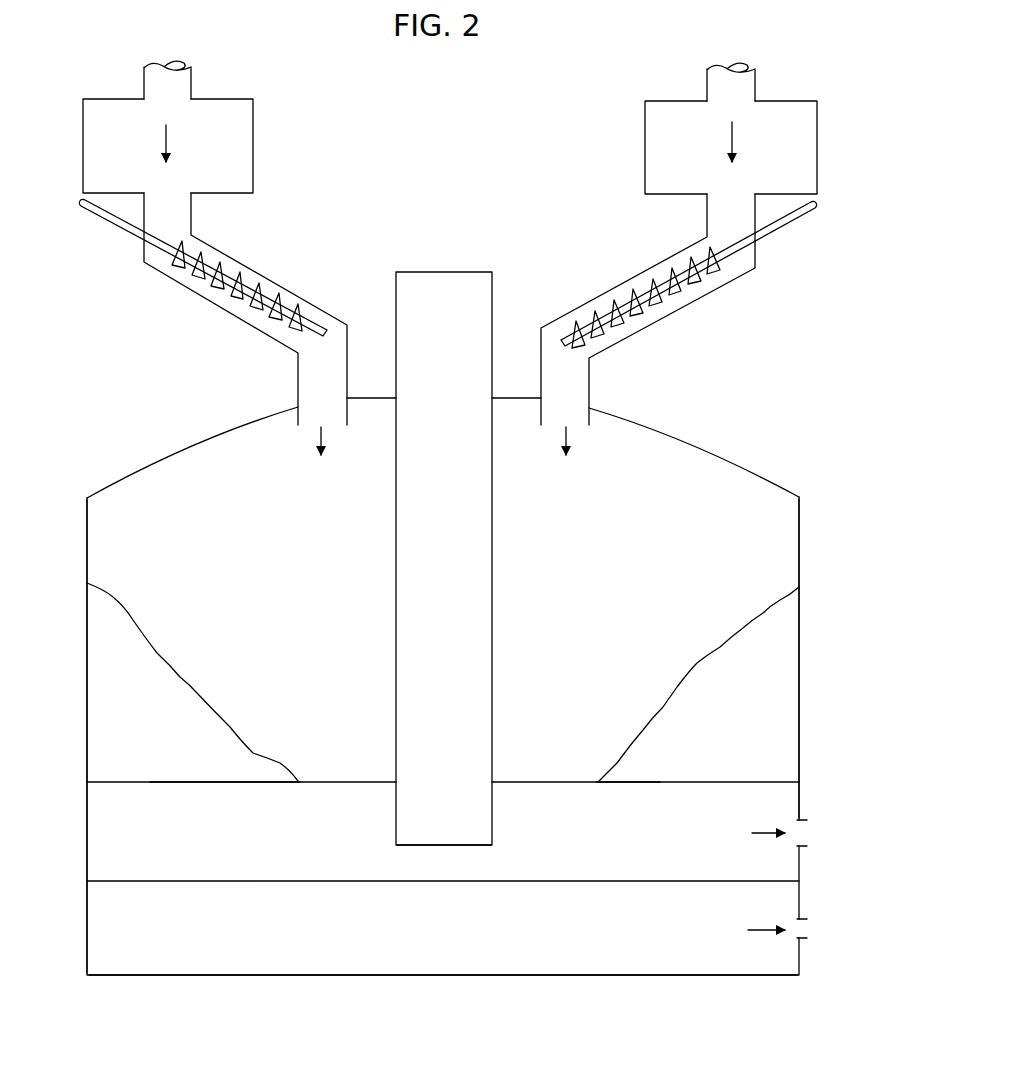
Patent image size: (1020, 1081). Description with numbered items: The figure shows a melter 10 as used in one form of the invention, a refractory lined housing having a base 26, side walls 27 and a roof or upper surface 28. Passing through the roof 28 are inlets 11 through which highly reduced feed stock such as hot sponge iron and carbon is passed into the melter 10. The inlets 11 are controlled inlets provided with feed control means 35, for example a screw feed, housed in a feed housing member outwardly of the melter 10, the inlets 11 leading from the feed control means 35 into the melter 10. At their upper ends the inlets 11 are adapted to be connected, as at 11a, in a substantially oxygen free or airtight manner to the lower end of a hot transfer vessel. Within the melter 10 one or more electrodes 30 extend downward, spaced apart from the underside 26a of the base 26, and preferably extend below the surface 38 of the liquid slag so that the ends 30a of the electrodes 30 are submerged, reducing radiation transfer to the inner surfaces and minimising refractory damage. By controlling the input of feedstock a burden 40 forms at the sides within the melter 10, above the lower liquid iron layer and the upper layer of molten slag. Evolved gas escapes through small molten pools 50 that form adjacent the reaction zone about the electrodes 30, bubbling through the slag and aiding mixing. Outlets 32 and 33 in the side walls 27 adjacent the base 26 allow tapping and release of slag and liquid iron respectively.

The melter 10 is at (76, 521).
The inlet 11 is at (298, 383).
The connection to hot transfer vessel 11a is at (214, 74).
The base 26 is at (215, 976).
The underside of the base 26a is at (402, 975).
The side walls 27 is at (87, 685).
The roof 28 is at (127, 472).
The electrode 30 is at (477, 643).
The end of electrode 30a is at (493, 833).
The slag outlet 32 is at (801, 816).
The liquid iron outlet 33 is at (799, 940).
The feed control means 35 is at (200, 285).
The surface of the liquid slag 38 is at (168, 782).
The burden 40 is at (158, 709).
The molten pool 50 is at (308, 782).